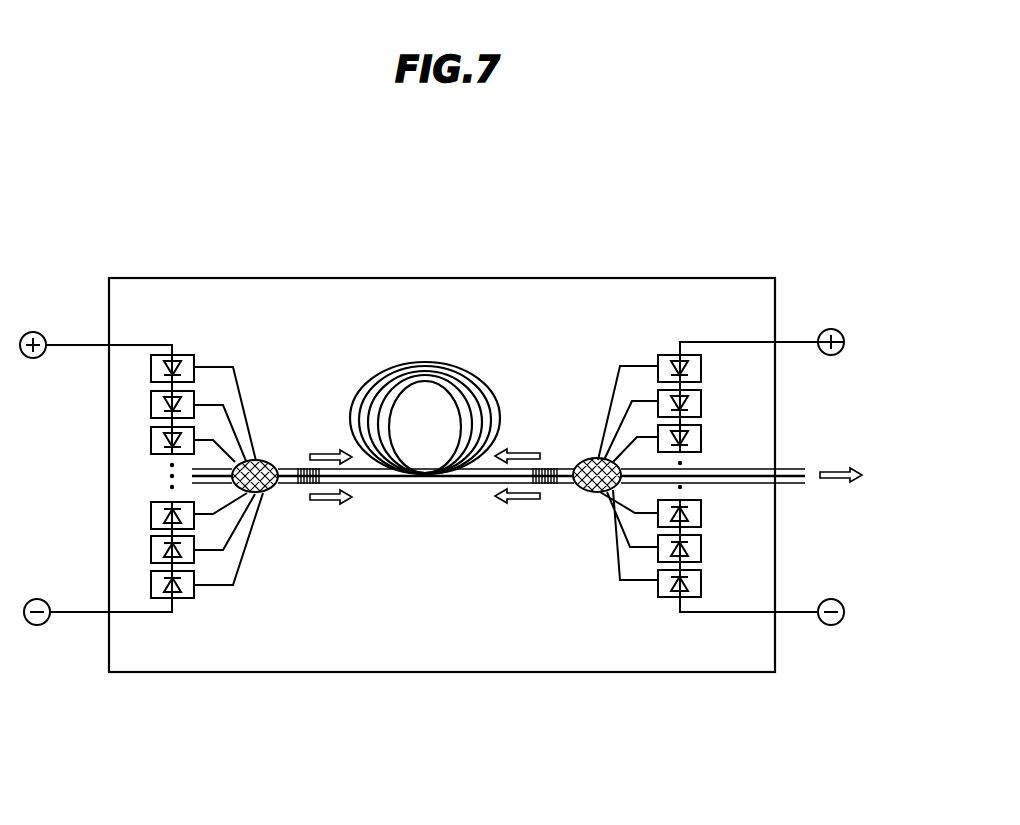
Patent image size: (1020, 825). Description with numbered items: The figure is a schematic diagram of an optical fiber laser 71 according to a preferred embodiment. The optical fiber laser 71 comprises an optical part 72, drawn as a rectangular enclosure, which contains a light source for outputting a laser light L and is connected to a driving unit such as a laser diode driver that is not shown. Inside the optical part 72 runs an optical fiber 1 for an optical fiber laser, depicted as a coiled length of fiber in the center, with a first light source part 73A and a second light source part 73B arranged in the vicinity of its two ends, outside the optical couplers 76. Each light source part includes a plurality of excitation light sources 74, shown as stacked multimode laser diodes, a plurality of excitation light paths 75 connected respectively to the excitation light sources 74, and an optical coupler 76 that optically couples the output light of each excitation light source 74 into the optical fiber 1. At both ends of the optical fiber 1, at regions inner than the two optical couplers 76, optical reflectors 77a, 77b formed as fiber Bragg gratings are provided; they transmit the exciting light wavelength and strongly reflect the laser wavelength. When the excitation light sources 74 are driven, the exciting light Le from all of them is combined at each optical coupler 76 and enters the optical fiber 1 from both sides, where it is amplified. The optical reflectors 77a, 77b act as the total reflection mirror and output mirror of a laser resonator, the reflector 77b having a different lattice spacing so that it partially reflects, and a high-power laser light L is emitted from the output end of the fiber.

The optical fiber laser 71 is at (588, 170).
The optical part 72 is at (301, 277).
The optical fiber for optical fiber laser 1 is at (426, 352).
The first light source part 73A is at (216, 346).
The second light source part 73B is at (640, 356).
The excitation light source 74 is at (150, 367).
The excitation light path 75 is at (222, 588).
The optical coupler 76 is at (257, 494).
The optical reflector 77a is at (305, 487).
The optical reflector 77b is at (547, 488).
The exciting light Le is at (352, 500).
The laser light L is at (838, 482).